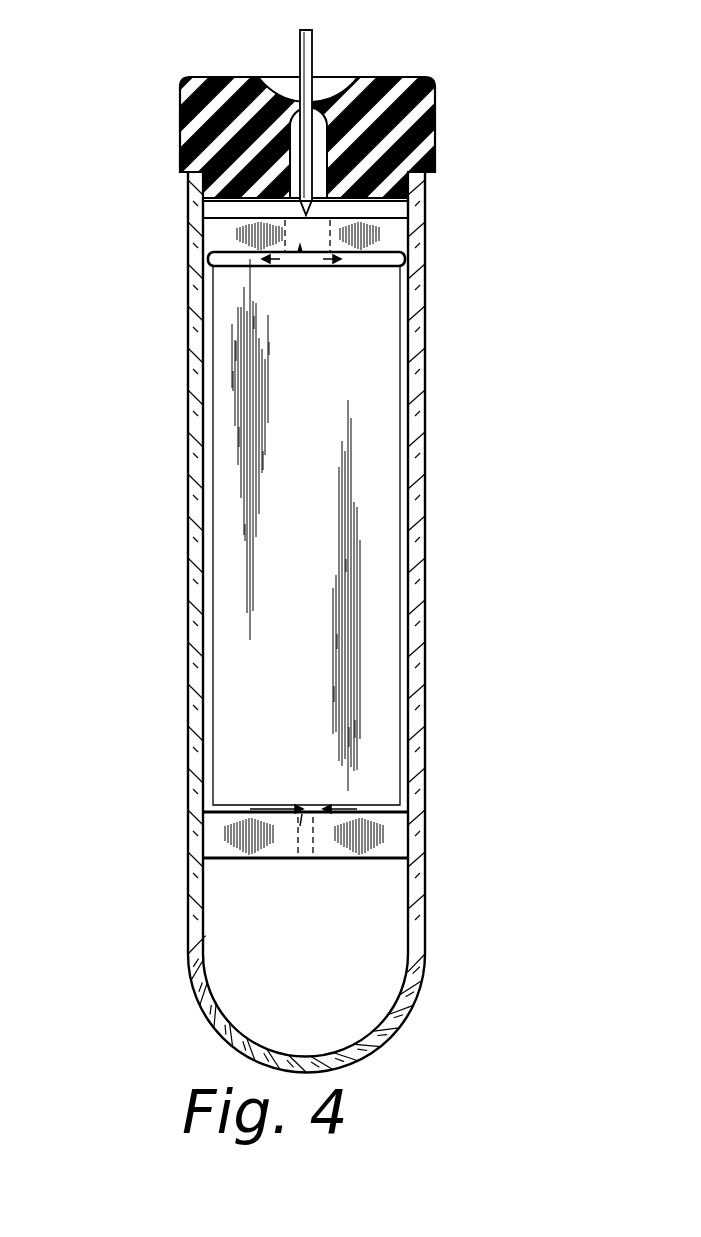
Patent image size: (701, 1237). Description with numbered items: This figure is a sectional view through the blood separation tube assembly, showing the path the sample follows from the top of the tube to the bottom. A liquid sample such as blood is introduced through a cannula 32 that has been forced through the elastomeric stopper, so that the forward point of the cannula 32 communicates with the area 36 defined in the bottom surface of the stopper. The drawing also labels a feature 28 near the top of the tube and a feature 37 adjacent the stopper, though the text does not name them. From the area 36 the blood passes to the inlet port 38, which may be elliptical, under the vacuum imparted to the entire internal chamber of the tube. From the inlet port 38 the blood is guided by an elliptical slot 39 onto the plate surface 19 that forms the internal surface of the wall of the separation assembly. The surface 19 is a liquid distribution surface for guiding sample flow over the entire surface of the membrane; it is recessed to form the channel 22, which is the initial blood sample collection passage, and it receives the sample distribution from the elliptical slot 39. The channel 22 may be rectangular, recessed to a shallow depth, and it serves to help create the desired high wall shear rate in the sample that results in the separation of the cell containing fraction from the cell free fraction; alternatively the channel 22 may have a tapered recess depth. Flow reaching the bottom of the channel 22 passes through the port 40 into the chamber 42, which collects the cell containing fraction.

The surface 19 is at (400, 452).
The initial blood sample collection passage 22 is at (390, 590).
The stopper 28 is at (332, 113).
The cannula 32 is at (312, 45).
The area 36 is at (297, 133).
The spacer band 37 is at (393, 208).
The inlet port 38 is at (315, 242).
The elliptical slot 39 is at (246, 256).
The port 40 is at (307, 845).
The chamber 42 is at (387, 942).